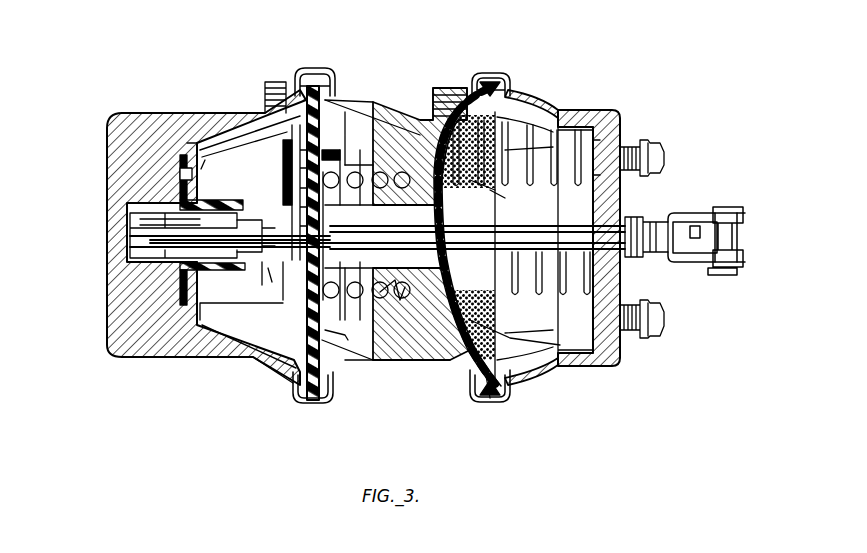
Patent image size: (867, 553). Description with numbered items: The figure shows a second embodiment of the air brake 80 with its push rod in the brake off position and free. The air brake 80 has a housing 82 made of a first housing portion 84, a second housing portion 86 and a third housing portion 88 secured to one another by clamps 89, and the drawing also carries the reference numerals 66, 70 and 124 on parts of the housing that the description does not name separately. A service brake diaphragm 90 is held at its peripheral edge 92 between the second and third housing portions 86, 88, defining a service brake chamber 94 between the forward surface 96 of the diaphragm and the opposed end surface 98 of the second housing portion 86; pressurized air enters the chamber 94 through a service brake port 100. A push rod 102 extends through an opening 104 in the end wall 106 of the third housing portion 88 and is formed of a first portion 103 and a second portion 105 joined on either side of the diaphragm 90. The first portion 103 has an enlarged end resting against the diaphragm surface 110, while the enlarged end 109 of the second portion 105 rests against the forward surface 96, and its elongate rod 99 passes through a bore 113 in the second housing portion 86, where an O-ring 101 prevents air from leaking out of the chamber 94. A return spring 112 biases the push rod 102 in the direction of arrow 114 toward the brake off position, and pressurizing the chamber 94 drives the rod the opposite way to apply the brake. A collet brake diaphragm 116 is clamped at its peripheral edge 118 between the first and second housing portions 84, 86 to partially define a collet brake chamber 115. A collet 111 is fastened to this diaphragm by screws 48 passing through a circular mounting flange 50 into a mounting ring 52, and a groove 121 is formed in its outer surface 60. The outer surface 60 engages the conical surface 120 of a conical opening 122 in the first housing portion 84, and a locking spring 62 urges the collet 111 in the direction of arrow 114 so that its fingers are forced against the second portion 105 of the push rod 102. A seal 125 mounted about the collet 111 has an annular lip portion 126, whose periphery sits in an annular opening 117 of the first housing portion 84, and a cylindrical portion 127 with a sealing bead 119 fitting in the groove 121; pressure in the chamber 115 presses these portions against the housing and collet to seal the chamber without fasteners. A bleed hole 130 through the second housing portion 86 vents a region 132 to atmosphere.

The screws 48 is at (292, 160).
The circular mounting flange 50 is at (293, 198).
The mounting ring 52 is at (345, 105).
The outer surface 60 is at (244, 302).
The locking spring 62 is at (340, 176).
The housing wall 66 is at (230, 115).
The bolt 70 is at (272, 82).
The air brake 80 is at (122, 393).
The housing 82 is at (268, 378).
The first housing portion 84 is at (180, 360).
The second housing portion 86 is at (398, 355).
The third housing portion 88 is at (580, 360).
The clamps 89 is at (328, 68).
The service brake diaphragm 90 is at (508, 104).
The peripheral edge 92 is at (492, 402).
The service brake chamber 94 is at (470, 380).
The forward surface 96 is at (428, 130).
The end surface 98 is at (452, 355).
The elongate rod 99 is at (286, 280).
The service brake port 100 is at (458, 88).
The O-ring 101 is at (378, 300).
The push rod 102 is at (660, 215).
The first portion 103 is at (515, 225).
The opening 104 is at (622, 256).
The second portion 105 is at (378, 296).
The end wall 106 is at (618, 200).
The enlarged end 109 is at (420, 365).
The surface 110 is at (518, 345).
The collet 111 is at (268, 278).
The return spring 112 is at (600, 150).
The bore 113 is at (470, 280).
The arrow 114 is at (700, 289).
The collet brake chamber 115 is at (302, 84).
The collet brake diaphragm 116 is at (298, 393).
The annular opening 117 is at (190, 150).
The peripheral edge 118 is at (320, 395).
The sealing bead 119 is at (237, 272).
The conical surface 120 is at (150, 265).
The groove 121 is at (250, 222).
The conical opening 122 is at (128, 214).
The housing block 124 is at (130, 112).
The seal 125 is at (183, 186).
The annular lip portion 126 is at (205, 153).
The cylindrical portion 127 is at (223, 176).
The bleed hole 130 is at (330, 150).
The region 132 is at (350, 345).